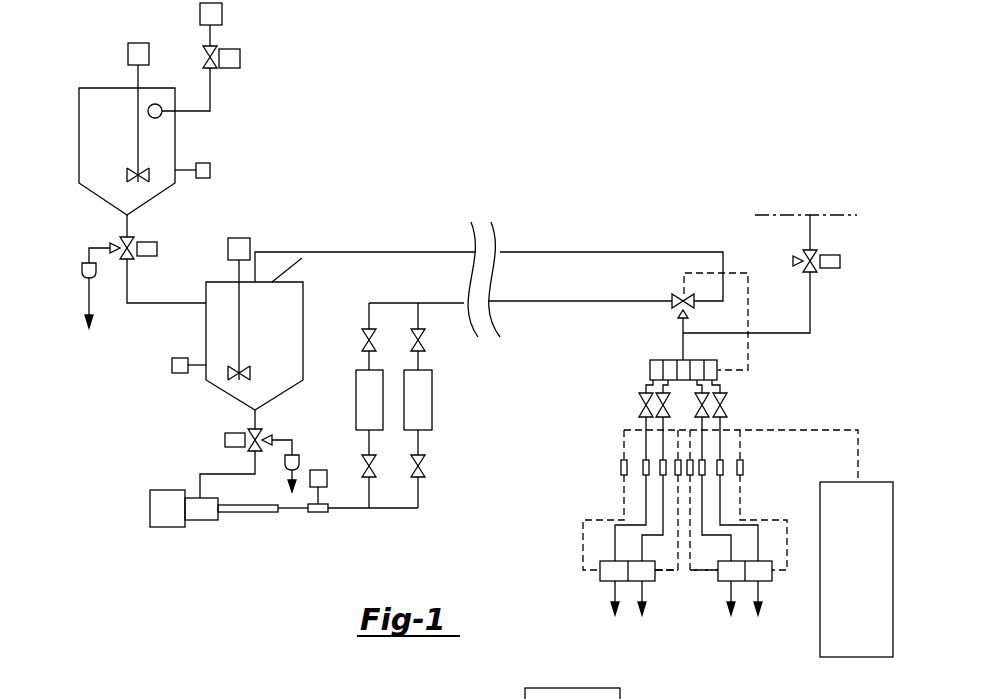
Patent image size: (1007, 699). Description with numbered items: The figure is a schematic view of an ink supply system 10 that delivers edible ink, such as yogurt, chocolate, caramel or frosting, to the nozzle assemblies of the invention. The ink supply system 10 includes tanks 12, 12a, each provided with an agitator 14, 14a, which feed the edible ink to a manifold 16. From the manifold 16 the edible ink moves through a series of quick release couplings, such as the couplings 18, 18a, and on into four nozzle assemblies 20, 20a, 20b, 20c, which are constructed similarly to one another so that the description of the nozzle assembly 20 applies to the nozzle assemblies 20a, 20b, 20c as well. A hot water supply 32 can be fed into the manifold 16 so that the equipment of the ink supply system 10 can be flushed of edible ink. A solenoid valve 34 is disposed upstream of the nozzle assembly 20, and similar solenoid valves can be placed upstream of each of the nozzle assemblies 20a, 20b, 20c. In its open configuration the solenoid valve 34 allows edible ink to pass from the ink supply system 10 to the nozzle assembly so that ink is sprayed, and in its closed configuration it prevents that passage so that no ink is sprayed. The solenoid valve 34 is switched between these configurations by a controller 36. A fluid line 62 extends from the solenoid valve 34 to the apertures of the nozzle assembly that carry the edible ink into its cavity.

The ink supply system 10 is at (533, 70).
The tank 12 is at (90, 120).
The agitator 14 is at (158, 166).
The tank 12a is at (220, 340).
The agitator 14a is at (210, 400).
The manifold 16 is at (639, 357).
The quick release coupling 18 is at (624, 462).
The quick release coupling 18a is at (725, 460).
The nozzle assembly 20 is at (664, 575).
The nozzle assembly 20a is at (661, 588).
The nozzle assembly 20b is at (710, 589).
The nozzle assembly 20c is at (777, 589).
The hot water supply 32 is at (823, 280).
The solenoid valve 34 is at (637, 405).
The controller 36 is at (873, 575).
The fluid line 62 is at (615, 541).